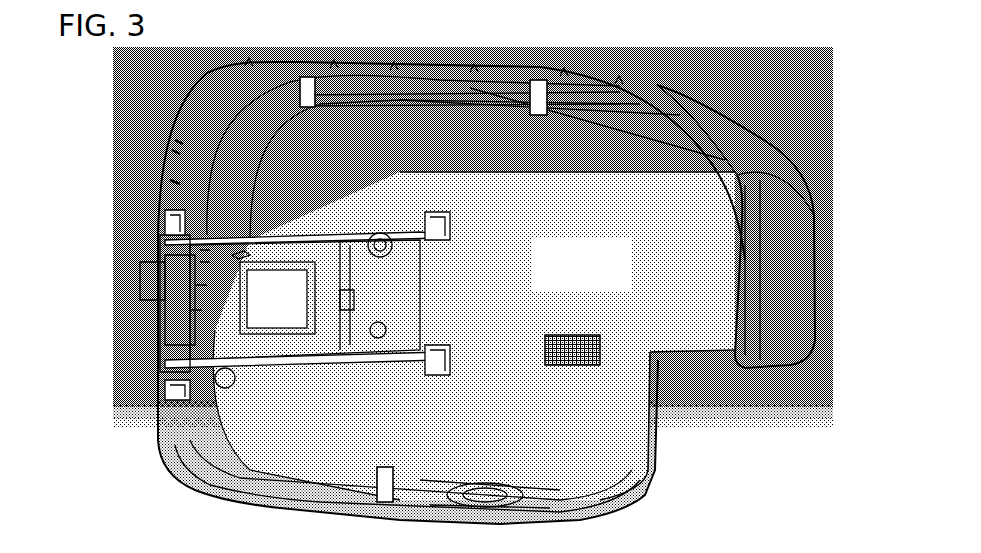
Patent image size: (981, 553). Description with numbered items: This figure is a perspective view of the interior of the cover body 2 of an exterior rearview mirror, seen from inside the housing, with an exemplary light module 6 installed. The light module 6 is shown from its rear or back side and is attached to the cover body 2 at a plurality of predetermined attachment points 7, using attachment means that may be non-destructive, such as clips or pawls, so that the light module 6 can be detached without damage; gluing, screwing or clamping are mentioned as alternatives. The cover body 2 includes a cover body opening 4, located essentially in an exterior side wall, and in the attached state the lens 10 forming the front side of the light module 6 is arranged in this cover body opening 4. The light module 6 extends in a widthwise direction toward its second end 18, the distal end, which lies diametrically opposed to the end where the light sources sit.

The cover body 2 is at (780, 232).
The cover body opening 4 is at (150, 265).
The light module 6 is at (215, 340).
The attachment points 7 is at (168, 218).
The lens 10 is at (150, 305).
The second end 18 is at (134, 287).